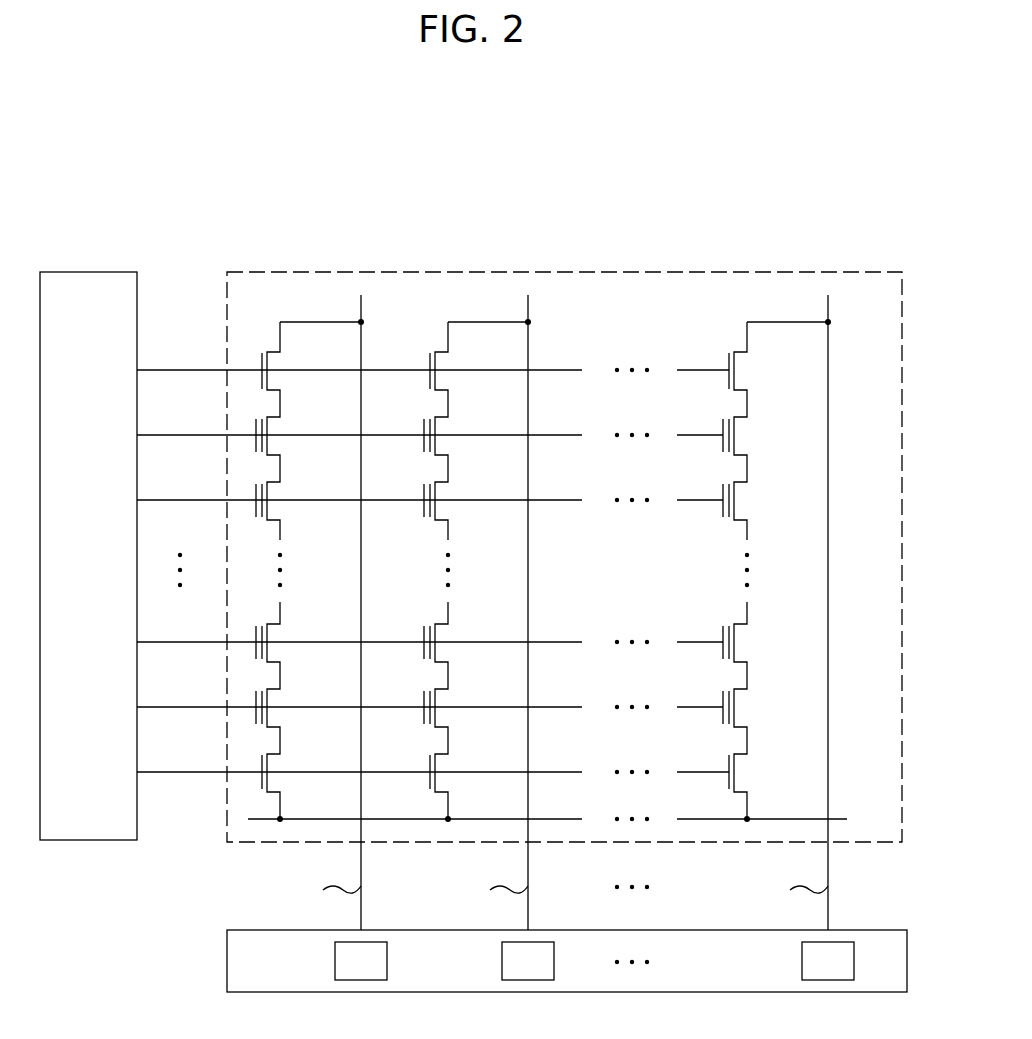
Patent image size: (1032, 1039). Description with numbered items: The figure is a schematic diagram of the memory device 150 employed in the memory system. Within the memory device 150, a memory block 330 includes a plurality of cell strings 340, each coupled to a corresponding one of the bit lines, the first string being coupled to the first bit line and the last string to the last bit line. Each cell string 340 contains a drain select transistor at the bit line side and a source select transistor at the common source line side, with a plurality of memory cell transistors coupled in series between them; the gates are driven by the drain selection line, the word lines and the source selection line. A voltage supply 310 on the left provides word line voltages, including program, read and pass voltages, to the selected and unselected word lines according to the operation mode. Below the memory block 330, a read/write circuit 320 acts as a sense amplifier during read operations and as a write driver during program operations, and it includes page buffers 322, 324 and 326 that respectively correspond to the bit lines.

The memory device 150 is at (876, 173).
The voltage supply 310 is at (91, 270).
The read/write circuit 320 is at (227, 960).
The page buffer 322 is at (335, 960).
The page buffer 324 is at (502, 960).
The page buffer 326 is at (802, 960).
The memory block 330 is at (790, 269).
The cell string 340 is at (266, 324).